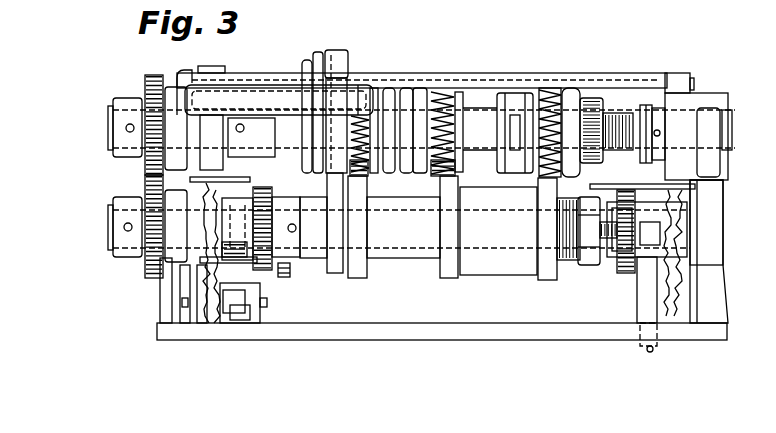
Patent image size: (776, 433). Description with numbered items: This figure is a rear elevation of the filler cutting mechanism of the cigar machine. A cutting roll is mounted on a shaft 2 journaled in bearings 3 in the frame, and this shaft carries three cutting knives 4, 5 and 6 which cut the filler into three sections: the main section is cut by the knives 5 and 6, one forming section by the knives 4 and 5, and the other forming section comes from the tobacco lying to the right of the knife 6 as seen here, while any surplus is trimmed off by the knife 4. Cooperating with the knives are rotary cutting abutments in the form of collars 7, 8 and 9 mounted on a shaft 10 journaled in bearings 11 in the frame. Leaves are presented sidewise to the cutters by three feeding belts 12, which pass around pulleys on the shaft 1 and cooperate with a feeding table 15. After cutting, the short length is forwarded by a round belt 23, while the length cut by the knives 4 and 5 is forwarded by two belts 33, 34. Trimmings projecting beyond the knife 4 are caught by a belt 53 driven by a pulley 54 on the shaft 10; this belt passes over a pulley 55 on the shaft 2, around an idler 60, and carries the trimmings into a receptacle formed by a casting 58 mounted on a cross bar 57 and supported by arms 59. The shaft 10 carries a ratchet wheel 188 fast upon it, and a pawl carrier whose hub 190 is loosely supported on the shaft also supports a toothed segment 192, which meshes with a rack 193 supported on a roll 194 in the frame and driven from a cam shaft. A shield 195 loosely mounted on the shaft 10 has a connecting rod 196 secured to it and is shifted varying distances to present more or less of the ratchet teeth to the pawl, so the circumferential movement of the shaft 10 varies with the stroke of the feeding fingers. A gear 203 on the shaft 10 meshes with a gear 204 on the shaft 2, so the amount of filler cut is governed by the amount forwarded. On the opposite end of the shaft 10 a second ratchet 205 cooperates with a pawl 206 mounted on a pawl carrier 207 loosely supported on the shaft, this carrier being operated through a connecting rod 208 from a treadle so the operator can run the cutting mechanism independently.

The shaft 1 is at (480, 129).
The shaft 2 is at (108, 130).
The bearings 3 is at (729, 110).
The cutting knife 4 is at (370, 172).
The cutting knife 5 is at (440, 174).
The cutting knife 6 is at (556, 178).
The collar 7 is at (357, 280).
The collar 8 is at (449, 281).
The collar 9 is at (547, 283).
The shaft 10 is at (108, 229).
The bearings 11 is at (724, 216).
The feeding belts 12 is at (305, 65).
The feeding table 15 is at (248, 180).
The round belt 23 is at (570, 95).
The belt 33 is at (374, 90).
The belt 34 is at (425, 90).
The belt 53 is at (320, 52).
The pulley 54 is at (328, 262).
The pulley 55 is at (308, 190).
The cross bar 57 is at (242, 78).
The casting 58 is at (279, 100).
The arms 59 is at (180, 78).
The idler 60 is at (336, 52).
The ratchet wheel 188 is at (262, 292).
The hub 190 is at (237, 229).
The toothed segment 192 is at (192, 268).
The rack 193 is at (204, 279).
The roll 194 is at (240, 322).
The shield 195 is at (268, 182).
The connecting rod 196 is at (290, 278).
The gear 203 is at (146, 262).
The gear 204 is at (146, 152).
The ratchet 205 is at (622, 274).
The pawl 206 is at (628, 211).
The pawl carrier 207 is at (623, 236).
The connecting rod 208 is at (645, 343).